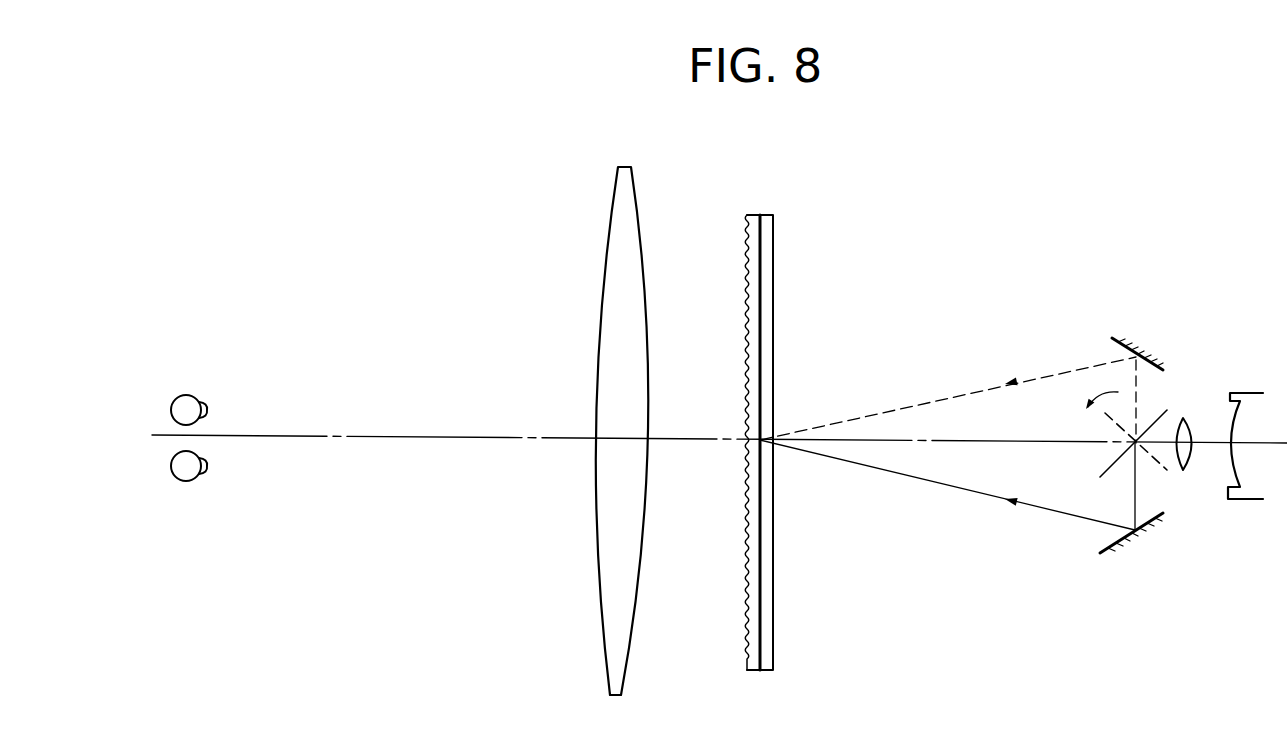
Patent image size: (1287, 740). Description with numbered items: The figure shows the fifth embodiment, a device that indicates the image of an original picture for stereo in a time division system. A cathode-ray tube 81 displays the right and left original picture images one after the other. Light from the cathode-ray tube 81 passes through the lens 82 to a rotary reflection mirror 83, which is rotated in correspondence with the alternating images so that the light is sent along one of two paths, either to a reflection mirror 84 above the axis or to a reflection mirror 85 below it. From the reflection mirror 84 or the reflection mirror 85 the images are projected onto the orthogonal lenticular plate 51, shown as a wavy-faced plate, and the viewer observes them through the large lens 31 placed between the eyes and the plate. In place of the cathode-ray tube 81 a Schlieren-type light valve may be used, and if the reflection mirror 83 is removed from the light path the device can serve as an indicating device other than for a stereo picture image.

The lens 31 is at (627, 182).
The orthogonal lenticular plate 51 is at (748, 206).
The cathode-ray tube 81 is at (1249, 392).
The lens 82 is at (1185, 457).
The rotary reflection mirror 83 is at (1100, 474).
The reflection mirror 84 is at (1140, 347).
The reflection mirror 85 is at (1135, 546).